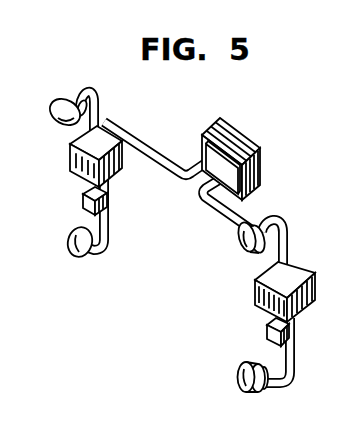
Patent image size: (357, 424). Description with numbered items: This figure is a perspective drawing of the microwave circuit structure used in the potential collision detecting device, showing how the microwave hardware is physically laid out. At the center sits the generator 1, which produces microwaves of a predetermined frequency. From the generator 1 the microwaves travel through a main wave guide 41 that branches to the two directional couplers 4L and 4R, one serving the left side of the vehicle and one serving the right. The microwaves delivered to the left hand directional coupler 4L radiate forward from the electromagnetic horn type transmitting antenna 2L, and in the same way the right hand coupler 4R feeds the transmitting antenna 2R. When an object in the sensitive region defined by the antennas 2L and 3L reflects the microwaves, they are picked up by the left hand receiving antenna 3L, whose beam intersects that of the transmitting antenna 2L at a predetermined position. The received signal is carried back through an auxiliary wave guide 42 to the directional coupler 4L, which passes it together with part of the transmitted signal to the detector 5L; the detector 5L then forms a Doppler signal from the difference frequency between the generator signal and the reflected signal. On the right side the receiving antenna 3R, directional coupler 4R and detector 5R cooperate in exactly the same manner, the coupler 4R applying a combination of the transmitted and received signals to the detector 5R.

The generator 1 is at (231, 132).
The transmitting antenna 2R is at (70, 235).
The transmitting antenna 2L is at (238, 378).
The receiving antenna 3R is at (62, 101).
The receiving antenna 3L is at (241, 250).
The directional coupler 4R is at (114, 168).
The directional coupler 4L is at (313, 288).
The detector 5R is at (83, 194).
The detector 5L is at (267, 327).
The main wave guide 41 is at (172, 156).
The auxiliary wave guide 42 is at (98, 101).